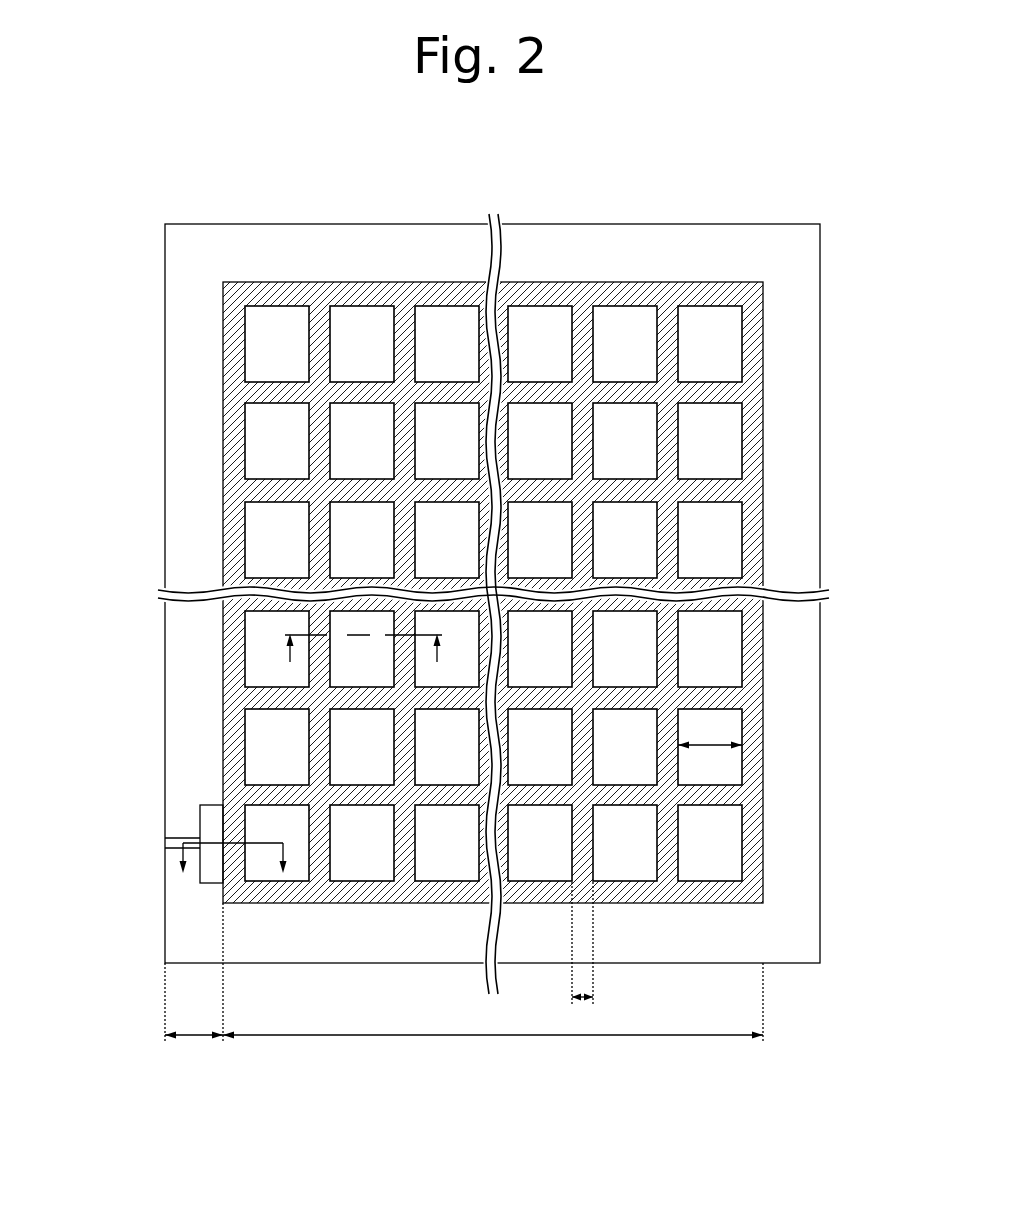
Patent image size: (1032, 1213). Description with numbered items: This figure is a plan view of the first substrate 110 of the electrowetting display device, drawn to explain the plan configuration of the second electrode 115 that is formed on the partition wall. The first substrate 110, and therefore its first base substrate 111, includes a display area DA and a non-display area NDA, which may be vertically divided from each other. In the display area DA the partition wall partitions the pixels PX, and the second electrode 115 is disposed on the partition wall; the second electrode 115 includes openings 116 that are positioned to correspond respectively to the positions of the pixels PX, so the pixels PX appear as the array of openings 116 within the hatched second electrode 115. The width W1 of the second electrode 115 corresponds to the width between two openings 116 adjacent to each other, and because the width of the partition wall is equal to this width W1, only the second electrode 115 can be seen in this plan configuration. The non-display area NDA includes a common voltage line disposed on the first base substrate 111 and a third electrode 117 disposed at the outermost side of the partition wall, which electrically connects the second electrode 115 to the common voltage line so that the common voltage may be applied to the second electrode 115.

The first substrate 110 is at (479, 606).
The first base substrate 111 is at (802, 786).
The second electrode 115 is at (752, 697).
The openings 116 is at (710, 746).
The third electrode 117 is at (207, 820).
The pixels PX is at (727, 648).
The width of the second electrode W1 is at (582, 954).
The non-display area NDA is at (194, 983).
The display area DA is at (493, 1013).